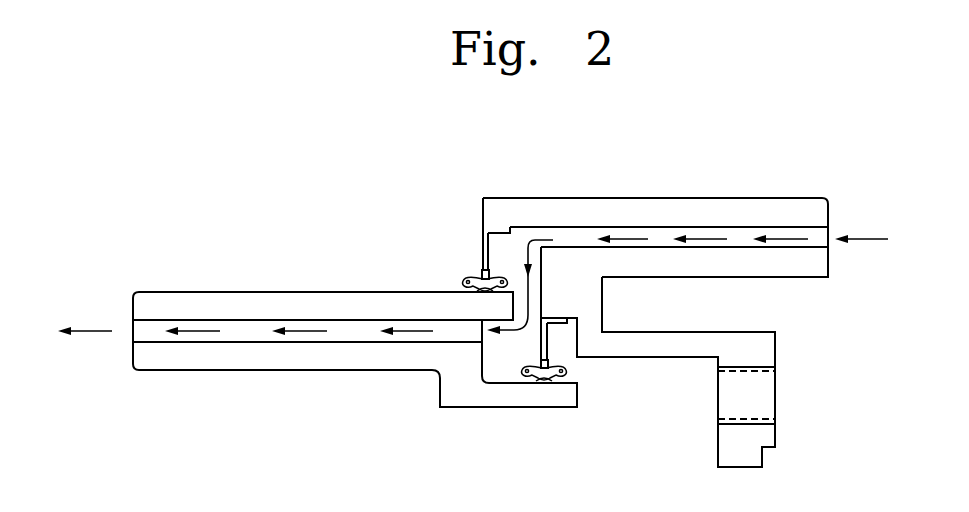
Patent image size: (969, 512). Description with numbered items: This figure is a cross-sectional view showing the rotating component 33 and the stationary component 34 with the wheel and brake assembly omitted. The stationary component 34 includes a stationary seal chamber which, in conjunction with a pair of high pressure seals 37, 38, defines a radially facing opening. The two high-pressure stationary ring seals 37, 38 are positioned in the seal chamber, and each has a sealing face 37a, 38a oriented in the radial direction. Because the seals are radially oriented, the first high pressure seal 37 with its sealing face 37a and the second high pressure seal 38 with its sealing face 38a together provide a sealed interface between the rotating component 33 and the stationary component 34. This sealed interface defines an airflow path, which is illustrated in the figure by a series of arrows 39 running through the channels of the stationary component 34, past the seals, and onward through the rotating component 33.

The rotating component 33 is at (258, 300).
The stationary component 34 is at (652, 210).
The high pressure seal 37 is at (480, 282).
The sealing face 37a is at (485, 290).
The high pressure seal 38 is at (548, 361).
The sealing face 38a is at (543, 395).
The arrows 39 is at (633, 240).